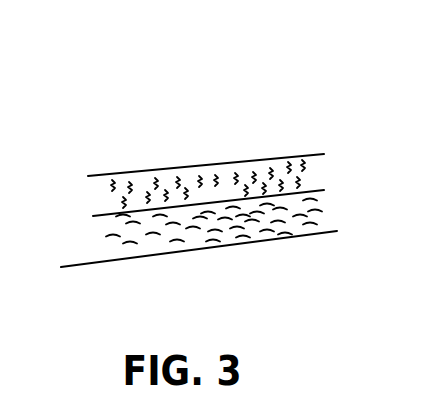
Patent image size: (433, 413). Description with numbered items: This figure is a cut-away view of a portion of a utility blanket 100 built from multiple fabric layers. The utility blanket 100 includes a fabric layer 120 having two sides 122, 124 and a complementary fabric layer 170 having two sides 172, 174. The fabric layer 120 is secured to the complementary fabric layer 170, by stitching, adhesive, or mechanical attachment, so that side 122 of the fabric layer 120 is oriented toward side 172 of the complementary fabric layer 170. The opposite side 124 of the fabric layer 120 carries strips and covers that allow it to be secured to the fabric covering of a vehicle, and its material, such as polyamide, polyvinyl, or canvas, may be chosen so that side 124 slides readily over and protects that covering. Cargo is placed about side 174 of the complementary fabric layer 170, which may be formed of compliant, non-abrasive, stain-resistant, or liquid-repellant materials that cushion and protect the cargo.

The utility blanket 100 is at (246, 65).
The fabric layer 120 is at (295, 220).
The side of fabric layer 122 is at (114, 214).
The side of fabric layer 124 is at (170, 253).
The complementary fabric layer 170 is at (289, 166).
The side of complementary fabric layer 172 is at (114, 214).
The side of complementary fabric layer 174 is at (126, 173).